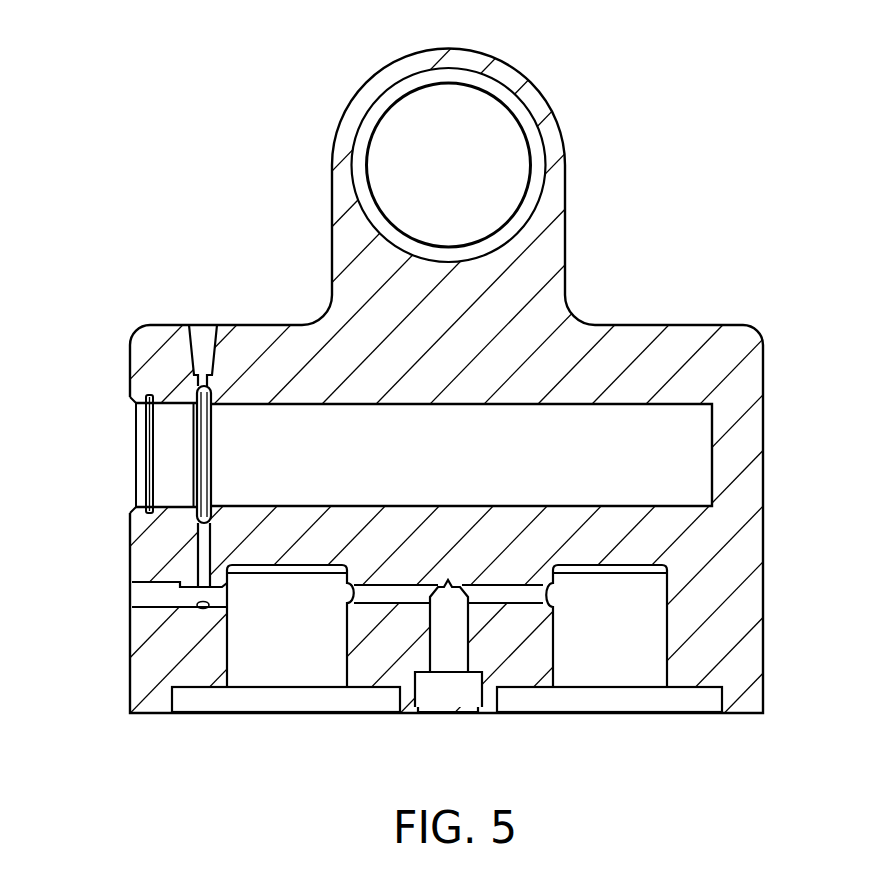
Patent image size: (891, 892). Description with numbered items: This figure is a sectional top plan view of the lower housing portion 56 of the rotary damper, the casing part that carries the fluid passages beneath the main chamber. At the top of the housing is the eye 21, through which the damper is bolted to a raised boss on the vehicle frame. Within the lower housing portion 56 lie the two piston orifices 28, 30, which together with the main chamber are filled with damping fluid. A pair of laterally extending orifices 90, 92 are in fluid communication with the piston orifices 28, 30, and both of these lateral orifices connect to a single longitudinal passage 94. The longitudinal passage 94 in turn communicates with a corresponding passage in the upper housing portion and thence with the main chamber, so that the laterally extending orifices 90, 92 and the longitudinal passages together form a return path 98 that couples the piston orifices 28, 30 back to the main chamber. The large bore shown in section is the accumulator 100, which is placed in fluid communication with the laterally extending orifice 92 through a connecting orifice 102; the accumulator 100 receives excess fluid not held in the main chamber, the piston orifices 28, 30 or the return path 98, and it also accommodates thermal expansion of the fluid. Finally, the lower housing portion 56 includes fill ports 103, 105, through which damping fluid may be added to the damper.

The eye 21 is at (515, 68).
The lower housing portion 56 is at (762, 368).
The accumulator 100 is at (700, 470).
The fill port 103 is at (205, 338).
The connecting orifice 102 is at (202, 545).
The fill port 105 is at (140, 596).
The laterally extending orifice 92 is at (382, 593).
The return path 98 is at (448, 608).
The laterally extending orifice 90 is at (522, 593).
The longitudinal passage 94 is at (458, 690).
The piston orifice 30 is at (283, 663).
The piston orifice 28 is at (614, 663).